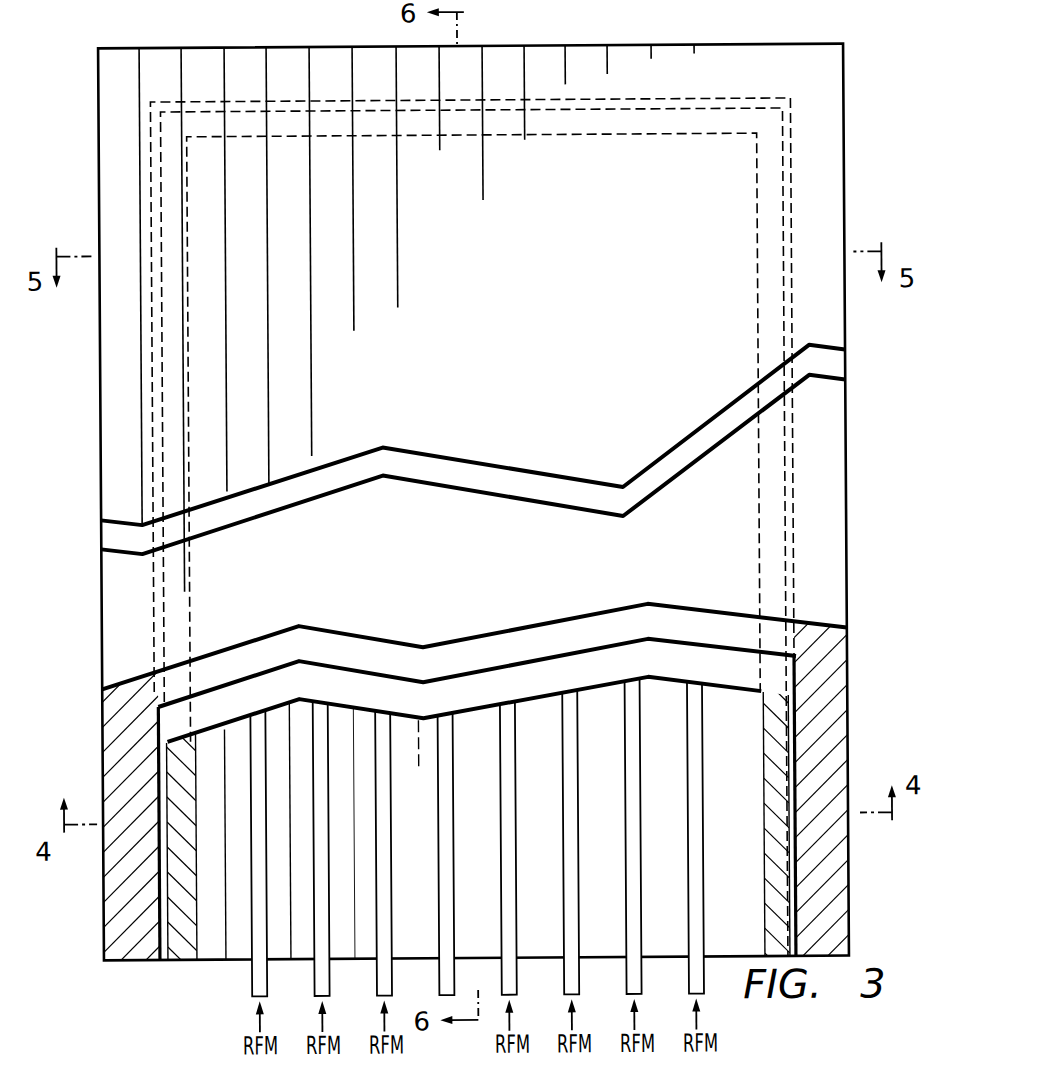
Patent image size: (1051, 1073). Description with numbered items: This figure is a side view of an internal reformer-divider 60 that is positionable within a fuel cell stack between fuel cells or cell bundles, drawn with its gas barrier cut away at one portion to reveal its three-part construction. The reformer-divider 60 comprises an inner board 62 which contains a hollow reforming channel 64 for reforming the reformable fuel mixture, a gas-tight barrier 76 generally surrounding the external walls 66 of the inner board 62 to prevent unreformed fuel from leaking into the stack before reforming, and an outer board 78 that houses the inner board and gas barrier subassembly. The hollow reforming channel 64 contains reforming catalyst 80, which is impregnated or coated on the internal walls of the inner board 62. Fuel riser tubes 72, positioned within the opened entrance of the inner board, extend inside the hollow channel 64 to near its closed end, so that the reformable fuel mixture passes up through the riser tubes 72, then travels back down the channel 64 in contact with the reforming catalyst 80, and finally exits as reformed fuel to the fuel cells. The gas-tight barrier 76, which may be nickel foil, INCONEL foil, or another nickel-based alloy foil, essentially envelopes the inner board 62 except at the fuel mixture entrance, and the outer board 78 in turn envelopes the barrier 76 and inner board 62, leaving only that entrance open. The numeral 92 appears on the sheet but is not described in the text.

The reformer-divider 60 is at (136, 1002).
The inner board 62 is at (767, 724).
The hollow reforming channel 64 is at (208, 760).
The external walls 66 is at (788, 875).
The fuel riser tubes 72 is at (320, 972).
The gas-tight barrier 76 is at (793, 743).
The outer board 78 is at (837, 713).
The reforming catalyst 80 is at (184, 898).
The reference element 92 is at (129, 1069).